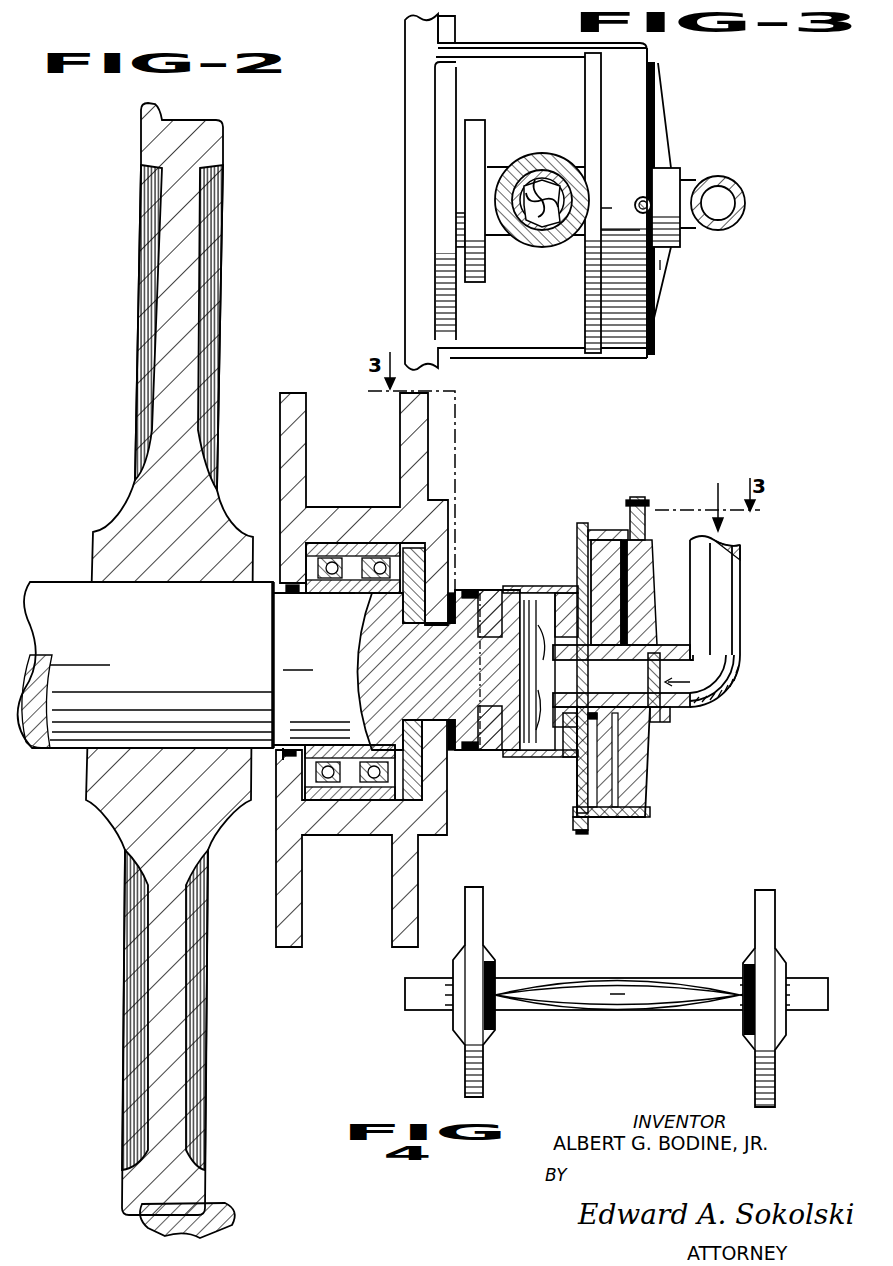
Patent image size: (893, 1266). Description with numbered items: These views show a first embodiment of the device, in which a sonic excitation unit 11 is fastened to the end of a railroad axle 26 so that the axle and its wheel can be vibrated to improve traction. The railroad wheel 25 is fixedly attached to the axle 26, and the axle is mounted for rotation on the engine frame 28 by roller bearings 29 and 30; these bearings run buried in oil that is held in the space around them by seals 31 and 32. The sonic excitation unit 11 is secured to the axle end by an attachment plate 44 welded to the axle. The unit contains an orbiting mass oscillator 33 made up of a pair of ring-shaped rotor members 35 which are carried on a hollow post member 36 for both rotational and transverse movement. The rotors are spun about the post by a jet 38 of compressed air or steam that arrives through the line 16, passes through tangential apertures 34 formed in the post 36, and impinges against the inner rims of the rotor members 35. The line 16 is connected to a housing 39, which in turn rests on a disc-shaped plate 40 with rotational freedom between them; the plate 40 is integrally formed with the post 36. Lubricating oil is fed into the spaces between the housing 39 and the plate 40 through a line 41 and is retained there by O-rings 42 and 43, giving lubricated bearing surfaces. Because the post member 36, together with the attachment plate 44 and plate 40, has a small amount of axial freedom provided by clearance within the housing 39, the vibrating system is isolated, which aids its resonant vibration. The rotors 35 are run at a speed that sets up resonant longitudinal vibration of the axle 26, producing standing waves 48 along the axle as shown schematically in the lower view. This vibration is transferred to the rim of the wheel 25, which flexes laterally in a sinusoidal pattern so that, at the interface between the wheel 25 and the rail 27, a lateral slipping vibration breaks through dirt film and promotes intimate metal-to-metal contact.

In FIG. 2, the sonic excitation unit 11 is at (698, 726).
In FIG. 3, the sonic excitation unit 11 is at (703, 271).
In FIG. 2, the line 16 is at (742, 592).
In FIG. 3, the line 16 is at (728, 185).
In FIG. 2, the railroad wheel 25 is at (185, 302).
In FIG. 4, the railroad wheel 25 is at (472, 895).
In FIG. 2, the axle 26 is at (186, 665).
In FIG. 4, the axle 26 is at (530, 1002).
In FIG. 2, the rail 27 is at (228, 1205).
In FIG. 2, the engine frame 28 is at (420, 458).
In FIG. 2, the roller bearing 29 is at (348, 560).
In FIG. 2, the roller bearing 30 is at (442, 612).
In FIG. 2, the seal 31 is at (288, 762).
In FIG. 2, the seal 32 is at (440, 765).
In FIG. 2, the orbiting mass oscillator 33 is at (533, 673).
In FIG. 3, the orbiting mass oscillator 33 is at (542, 201).
In FIG. 2, the tangential apertures 34 is at (574, 762).
In FIG. 3, the tangential apertures 34 is at (594, 166).
In FIG. 2, the ring-shaped rotor members 35 is at (490, 600).
In FIG. 3, the ring-shaped rotor members 35 is at (513, 172).
In FIG. 2, the hollow post member 36 is at (530, 752).
In FIG. 3, the hollow post member 36 is at (542, 180).
In FIG. 2, the jet 38 is at (740, 667).
In FIG. 2, the housing 39 is at (628, 590).
In FIG. 3, the housing 39 is at (655, 330).
In FIG. 2, the disc-shaped plate 40 is at (615, 797).
In FIG. 2, the line 41 is at (640, 520).
In FIG. 3, the line 41 is at (661, 178).
In FIG. 2, the O-ring 42 is at (582, 834).
In FIG. 2, the O-ring 43 is at (642, 622).
In FIG. 2, the attachment plate 44 is at (466, 752).
In FIG. 3, the attachment plate 44 is at (477, 287).
In FIG. 4, the standing waves 48 is at (622, 986).